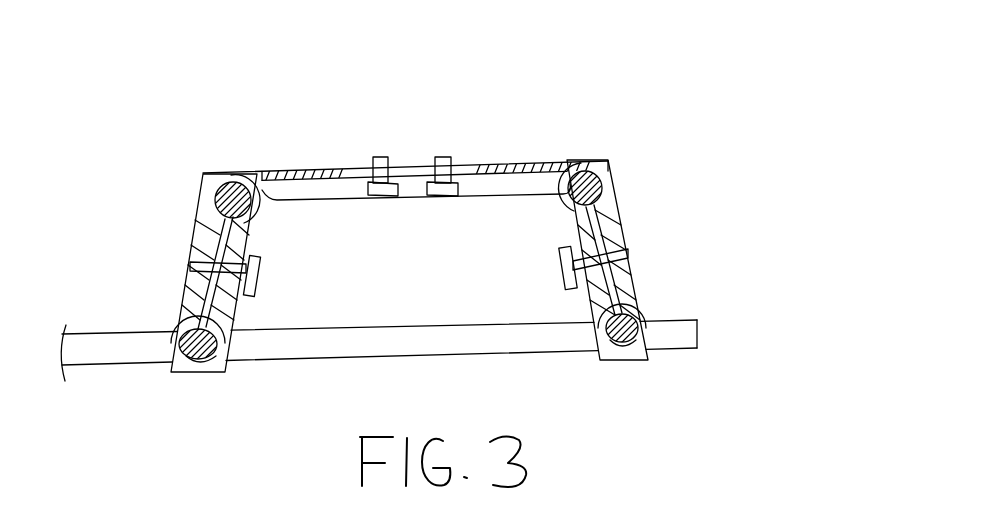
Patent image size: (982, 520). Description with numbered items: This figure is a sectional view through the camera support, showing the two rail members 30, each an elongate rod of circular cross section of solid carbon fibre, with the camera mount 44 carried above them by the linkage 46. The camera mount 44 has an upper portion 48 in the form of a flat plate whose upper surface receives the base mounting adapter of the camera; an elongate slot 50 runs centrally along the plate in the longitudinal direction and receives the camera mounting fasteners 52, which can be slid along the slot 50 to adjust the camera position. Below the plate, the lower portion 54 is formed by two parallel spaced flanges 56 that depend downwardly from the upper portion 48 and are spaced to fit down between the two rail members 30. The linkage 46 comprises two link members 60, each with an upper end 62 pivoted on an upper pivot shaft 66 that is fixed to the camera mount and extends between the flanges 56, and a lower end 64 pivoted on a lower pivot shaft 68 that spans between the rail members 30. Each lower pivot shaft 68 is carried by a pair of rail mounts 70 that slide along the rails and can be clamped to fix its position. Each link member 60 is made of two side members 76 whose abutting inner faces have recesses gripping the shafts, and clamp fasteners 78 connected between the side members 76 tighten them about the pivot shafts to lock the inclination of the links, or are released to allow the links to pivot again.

The rail member 30 is at (112, 366).
The camera mount 44 is at (538, 133).
The linkage 46 is at (704, 217).
The upper portion 48 is at (292, 170).
The elongate slot 50 is at (406, 158).
The camera mounting fasteners 52 is at (386, 196).
The lower portion 54 is at (323, 196).
The flanges 56 is at (415, 199).
The link member 60 is at (427, 280).
The upper end 62 is at (228, 173).
The lower end 64 is at (210, 380).
The upper pivot shaft 66 is at (215, 200).
The lower pivot shaft 68 is at (183, 362).
The rail mount 70 is at (225, 375).
The side members 76 is at (186, 306).
The clamp fasteners 78 is at (263, 265).